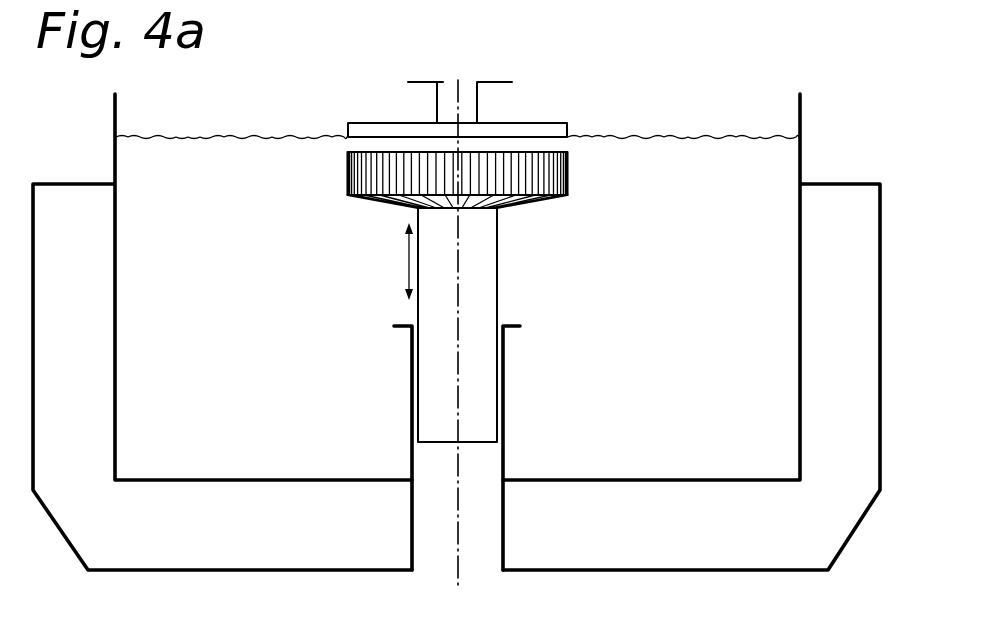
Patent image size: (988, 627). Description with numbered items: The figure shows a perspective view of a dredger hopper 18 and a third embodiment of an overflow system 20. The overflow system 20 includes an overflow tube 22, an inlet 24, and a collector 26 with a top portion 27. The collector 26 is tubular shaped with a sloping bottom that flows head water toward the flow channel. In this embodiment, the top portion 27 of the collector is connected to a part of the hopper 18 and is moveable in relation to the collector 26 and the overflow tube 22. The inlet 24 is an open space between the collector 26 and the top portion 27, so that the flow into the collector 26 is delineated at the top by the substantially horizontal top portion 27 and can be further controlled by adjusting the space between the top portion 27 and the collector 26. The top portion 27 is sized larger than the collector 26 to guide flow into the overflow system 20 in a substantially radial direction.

The hopper 18 is at (753, 117).
The overflow system 20 is at (580, 100).
The overflow tube 22 is at (505, 400).
The inlet 24 is at (345, 145).
The collector 26 is at (575, 170).
The top portion 27 is at (532, 130).